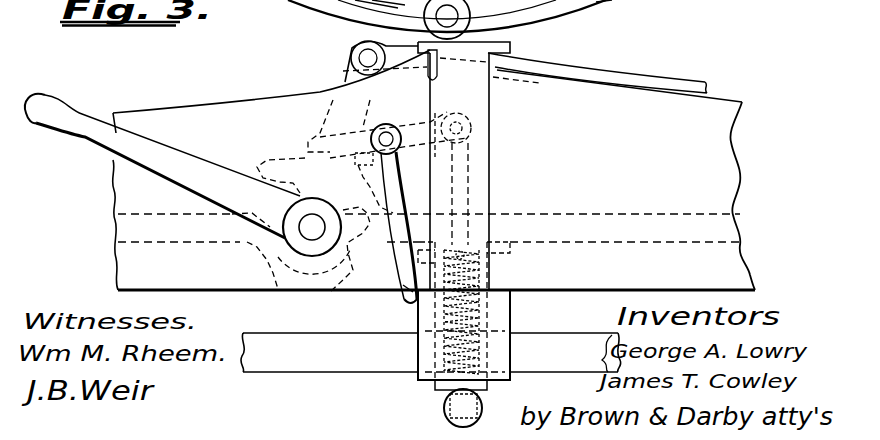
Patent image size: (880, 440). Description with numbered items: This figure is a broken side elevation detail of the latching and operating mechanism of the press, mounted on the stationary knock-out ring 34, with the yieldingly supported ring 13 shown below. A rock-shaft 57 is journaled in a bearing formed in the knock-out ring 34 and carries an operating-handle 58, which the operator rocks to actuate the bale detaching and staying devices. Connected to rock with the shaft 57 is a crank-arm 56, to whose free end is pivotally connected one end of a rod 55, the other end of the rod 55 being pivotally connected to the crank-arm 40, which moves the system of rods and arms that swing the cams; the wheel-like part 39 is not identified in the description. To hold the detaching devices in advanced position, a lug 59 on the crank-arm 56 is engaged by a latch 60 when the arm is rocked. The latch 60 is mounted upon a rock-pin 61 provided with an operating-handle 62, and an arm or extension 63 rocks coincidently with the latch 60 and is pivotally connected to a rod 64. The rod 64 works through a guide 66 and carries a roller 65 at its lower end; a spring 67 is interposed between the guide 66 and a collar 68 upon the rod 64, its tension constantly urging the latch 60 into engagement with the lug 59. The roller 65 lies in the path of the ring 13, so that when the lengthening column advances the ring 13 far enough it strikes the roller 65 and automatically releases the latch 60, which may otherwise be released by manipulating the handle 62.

The ring 13 is at (431, 352).
The knock-out ring 34 is at (324, 0).
The wheel 39 is at (421, 19).
The arm 40 is at (620, 6).
The rod 55 is at (655, 81).
The crank-arm 56 is at (345, 78).
The rock-shaft 57 is at (312, 232).
The operating-handle 58 is at (183, 175).
The lug 59 is at (405, 227).
The latch 60 is at (349, 196).
The rock-pin 61 is at (386, 139).
The operating-handle 62 is at (403, 262).
The arm or extension 63 is at (432, 115).
The rod 64 is at (472, 175).
The roller 65 is at (443, 403).
The guide 66 is at (490, 273).
The spring 67 is at (492, 318).
The collar 68 is at (493, 237).